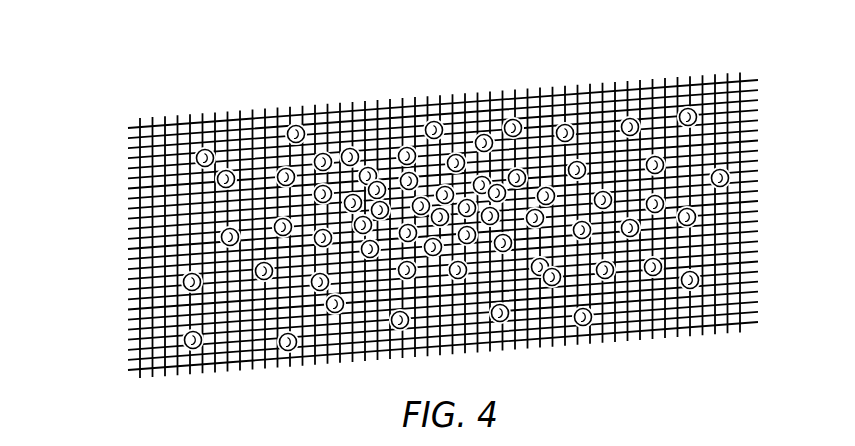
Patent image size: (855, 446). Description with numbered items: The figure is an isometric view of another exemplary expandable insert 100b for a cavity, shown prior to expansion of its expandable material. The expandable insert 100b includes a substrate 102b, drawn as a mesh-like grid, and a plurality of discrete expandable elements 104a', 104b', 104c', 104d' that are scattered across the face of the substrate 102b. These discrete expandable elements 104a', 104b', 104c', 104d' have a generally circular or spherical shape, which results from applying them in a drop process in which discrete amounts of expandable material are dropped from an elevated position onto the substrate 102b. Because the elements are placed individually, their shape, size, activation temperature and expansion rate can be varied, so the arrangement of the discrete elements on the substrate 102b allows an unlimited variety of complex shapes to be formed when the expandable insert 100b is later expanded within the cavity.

The expandable insert 100b is at (402, 218).
The substrate 102b is at (125, 346).
The discrete expandable element 104a' is at (253, 116).
The discrete expandable element 104b' is at (344, 92).
The discrete expandable element 104c' is at (404, 111).
The particle 104d' is at (488, 96).